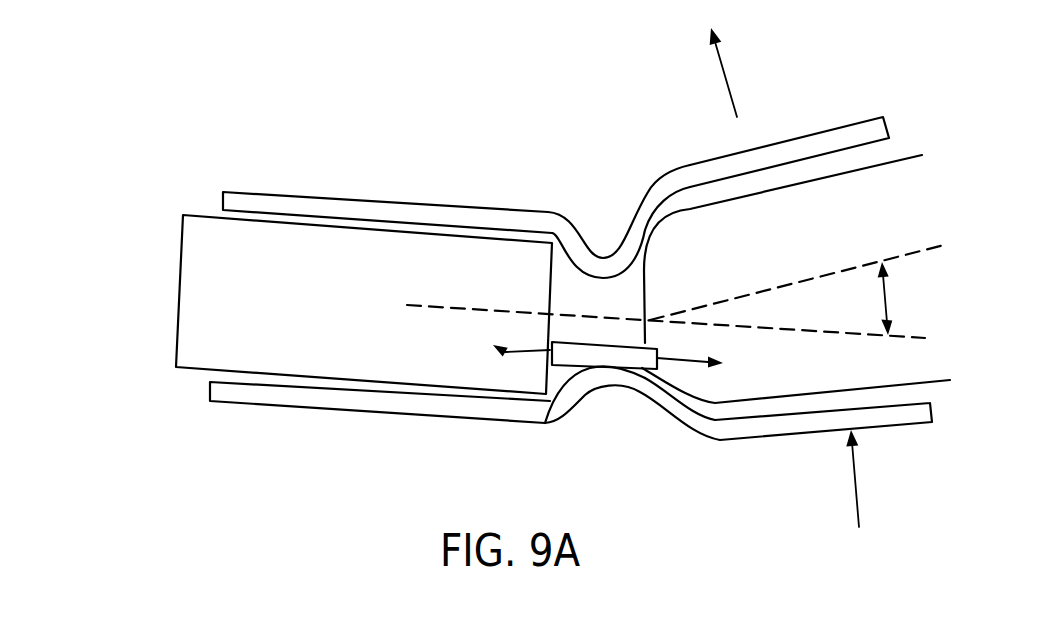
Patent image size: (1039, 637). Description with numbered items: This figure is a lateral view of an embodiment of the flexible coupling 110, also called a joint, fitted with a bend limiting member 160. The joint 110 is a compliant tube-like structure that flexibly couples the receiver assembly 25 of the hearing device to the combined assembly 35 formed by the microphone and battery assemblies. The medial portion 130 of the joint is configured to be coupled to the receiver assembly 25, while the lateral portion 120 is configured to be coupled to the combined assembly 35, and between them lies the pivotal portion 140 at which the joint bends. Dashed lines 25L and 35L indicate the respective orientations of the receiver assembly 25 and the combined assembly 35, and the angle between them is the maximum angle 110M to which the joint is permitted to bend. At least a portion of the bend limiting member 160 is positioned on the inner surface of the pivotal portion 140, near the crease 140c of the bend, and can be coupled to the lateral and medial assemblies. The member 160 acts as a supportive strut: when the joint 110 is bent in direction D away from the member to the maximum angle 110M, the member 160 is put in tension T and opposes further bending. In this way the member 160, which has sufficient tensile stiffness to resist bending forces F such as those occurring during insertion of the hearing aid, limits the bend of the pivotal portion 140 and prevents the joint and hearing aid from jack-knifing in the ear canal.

The flexible coupling 110 is at (391, 151).
The medial portion 130 is at (245, 197).
The lateral portion 120 is at (834, 133).
The pivotal portion 140 is at (622, 331).
The bend crease 140c is at (610, 370).
The bend limiting member 160 is at (543, 425).
The receiver assembly 25 is at (198, 238).
The combined assembly 35 is at (896, 187).
The axis of second region 35L is at (929, 244).
The axis of first member 25L is at (893, 338).
The maximum angle 110M is at (888, 300).
The tension T is at (496, 352).
The bend direction D is at (720, 58).
The bending forces F is at (857, 488).